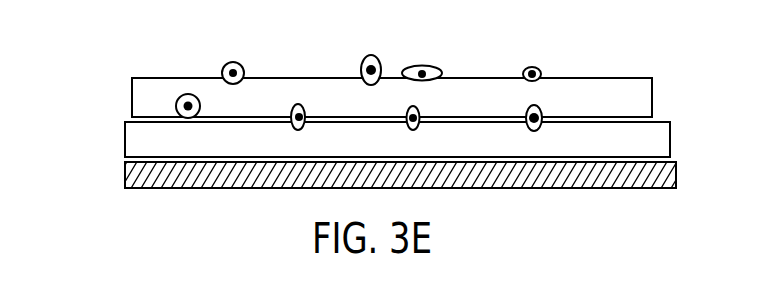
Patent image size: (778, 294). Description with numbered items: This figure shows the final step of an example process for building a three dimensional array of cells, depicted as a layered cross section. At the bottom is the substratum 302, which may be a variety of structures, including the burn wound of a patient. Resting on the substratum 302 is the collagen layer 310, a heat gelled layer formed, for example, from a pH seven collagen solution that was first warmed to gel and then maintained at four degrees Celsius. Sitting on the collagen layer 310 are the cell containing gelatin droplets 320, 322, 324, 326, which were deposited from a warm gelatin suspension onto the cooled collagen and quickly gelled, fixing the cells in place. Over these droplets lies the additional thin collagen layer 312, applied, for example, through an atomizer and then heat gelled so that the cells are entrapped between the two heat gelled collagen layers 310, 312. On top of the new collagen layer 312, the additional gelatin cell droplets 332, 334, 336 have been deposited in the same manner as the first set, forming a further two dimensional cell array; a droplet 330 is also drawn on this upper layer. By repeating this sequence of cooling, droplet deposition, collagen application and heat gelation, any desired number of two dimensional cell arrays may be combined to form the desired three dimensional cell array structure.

The substratum 302 is at (125, 175).
The collagen layer 310 is at (125, 147).
The additional thin collagen layer 312 is at (132, 103).
The cell containing gelatin droplet 320 is at (188, 94).
The cell containing gelatin droplet 322 is at (300, 104).
The cell containing gelatin droplet 324 is at (417, 108).
The cell containing gelatin droplet 326 is at (541, 107).
The particle at top surface 330 is at (234, 62).
The additional gelatin cell droplet 332 is at (370, 55).
The additional gelatin cell droplet 334 is at (436, 66).
The additional gelatin cell droplet 336 is at (537, 66).